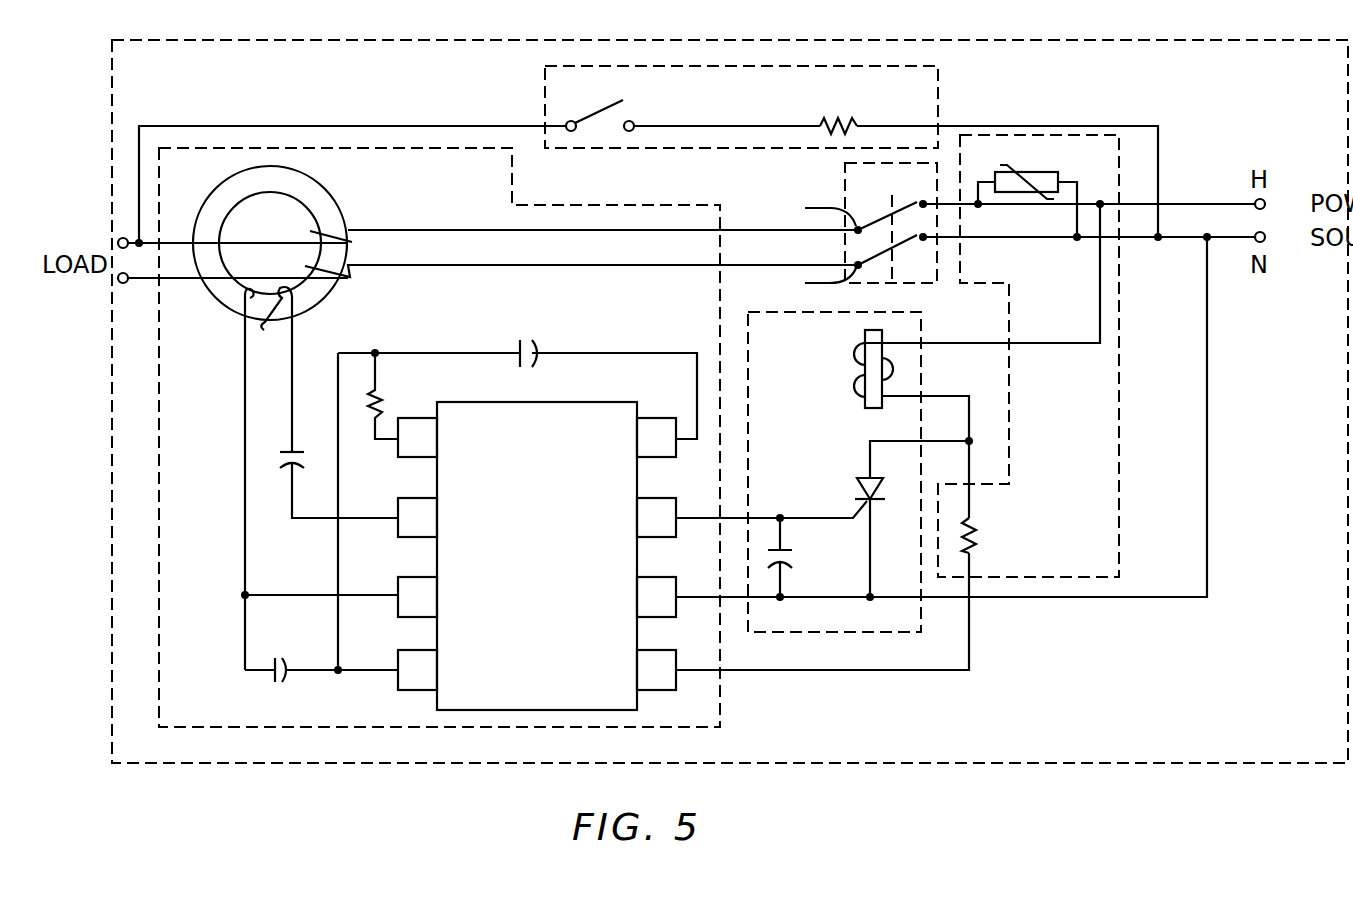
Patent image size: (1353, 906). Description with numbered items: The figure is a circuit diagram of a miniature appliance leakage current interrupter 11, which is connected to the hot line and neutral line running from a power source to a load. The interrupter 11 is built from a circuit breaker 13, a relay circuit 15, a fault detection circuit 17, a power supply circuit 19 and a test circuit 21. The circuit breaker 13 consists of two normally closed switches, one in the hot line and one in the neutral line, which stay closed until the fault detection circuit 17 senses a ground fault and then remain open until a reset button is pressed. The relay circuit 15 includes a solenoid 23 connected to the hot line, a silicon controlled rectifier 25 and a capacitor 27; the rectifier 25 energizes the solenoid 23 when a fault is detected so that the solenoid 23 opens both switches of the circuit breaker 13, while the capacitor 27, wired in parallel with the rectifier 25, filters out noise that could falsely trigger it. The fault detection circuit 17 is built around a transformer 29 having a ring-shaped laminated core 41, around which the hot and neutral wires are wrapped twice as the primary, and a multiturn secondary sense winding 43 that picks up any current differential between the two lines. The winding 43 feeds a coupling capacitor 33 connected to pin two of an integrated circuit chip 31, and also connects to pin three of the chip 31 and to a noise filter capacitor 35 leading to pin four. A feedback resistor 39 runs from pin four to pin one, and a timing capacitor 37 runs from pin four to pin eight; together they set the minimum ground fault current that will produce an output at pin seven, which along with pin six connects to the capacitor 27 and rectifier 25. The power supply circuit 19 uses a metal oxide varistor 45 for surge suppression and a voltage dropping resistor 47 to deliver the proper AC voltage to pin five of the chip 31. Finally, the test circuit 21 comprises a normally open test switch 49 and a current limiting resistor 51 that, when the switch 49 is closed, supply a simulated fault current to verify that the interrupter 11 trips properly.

The appliance leakage current interrupter 11 is at (285, 770).
The circuit breaker 13 is at (842, 165).
The relay circuit 15 is at (941, 451).
The fault detection circuit 17 is at (158, 508).
The power supply circuit 19 is at (932, 402).
The test circuit 21 is at (648, 154).
The solenoid 23 is at (865, 392).
The silicon controlled rectifier 25 is at (862, 478).
The capacitor 27 is at (793, 556).
The transformer 29 is at (285, 249).
The integrated circuit chip 31 is at (543, 426).
The coupling capacitor 33 is at (284, 460).
The noise filter capacitor 35 is at (283, 652).
The timing capacitor 37 is at (528, 340).
The feedback resistor 39 is at (382, 396).
The laminated core 41 is at (236, 208).
The secondary sense winding 43 is at (264, 330).
The metal oxide varistor 45 is at (1040, 170).
The voltage dropping resistor 47 is at (978, 531).
The test switch 49 is at (630, 119).
The current limiting resistor 51 is at (842, 118).